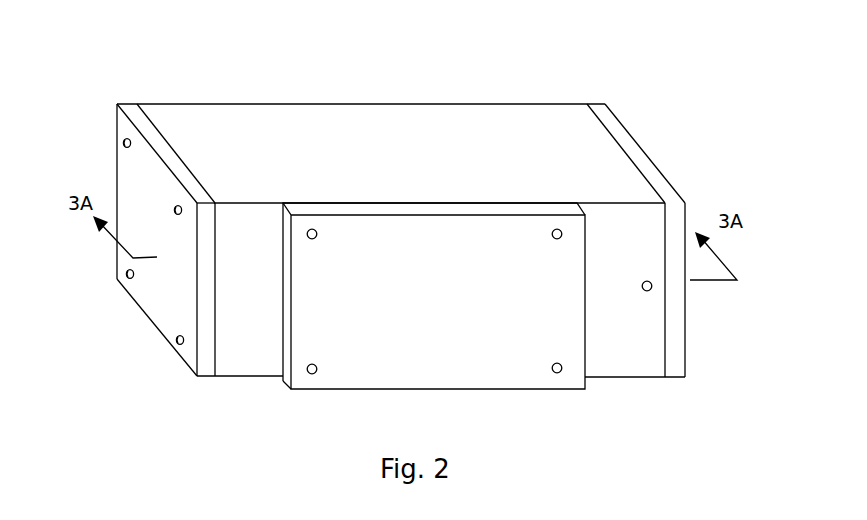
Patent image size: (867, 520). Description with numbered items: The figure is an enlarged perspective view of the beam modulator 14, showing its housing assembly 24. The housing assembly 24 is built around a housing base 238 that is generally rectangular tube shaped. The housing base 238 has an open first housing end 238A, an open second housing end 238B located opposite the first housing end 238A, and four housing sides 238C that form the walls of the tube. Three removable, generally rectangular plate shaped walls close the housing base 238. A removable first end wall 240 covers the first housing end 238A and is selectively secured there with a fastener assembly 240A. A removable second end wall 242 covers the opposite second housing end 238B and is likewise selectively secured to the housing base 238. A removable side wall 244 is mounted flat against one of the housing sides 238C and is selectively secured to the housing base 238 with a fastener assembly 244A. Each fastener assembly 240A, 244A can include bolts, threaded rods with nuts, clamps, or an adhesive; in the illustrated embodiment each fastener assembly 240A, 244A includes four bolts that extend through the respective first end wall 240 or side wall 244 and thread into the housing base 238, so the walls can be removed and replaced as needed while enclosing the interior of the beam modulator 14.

The beam modulator 14 is at (604, 80).
The housing assembly 24 is at (226, 118).
The housing base 238 is at (365, 127).
The first housing end 238A is at (157, 125).
The second housing end 238B is at (604, 128).
The housing sides 238C is at (441, 118).
The first end wall 240 is at (133, 110).
The fastener assembly 240A is at (122, 143).
The second end wall 242 is at (632, 128).
The side wall 244 is at (510, 362).
The fastener assembly 244A is at (559, 373).